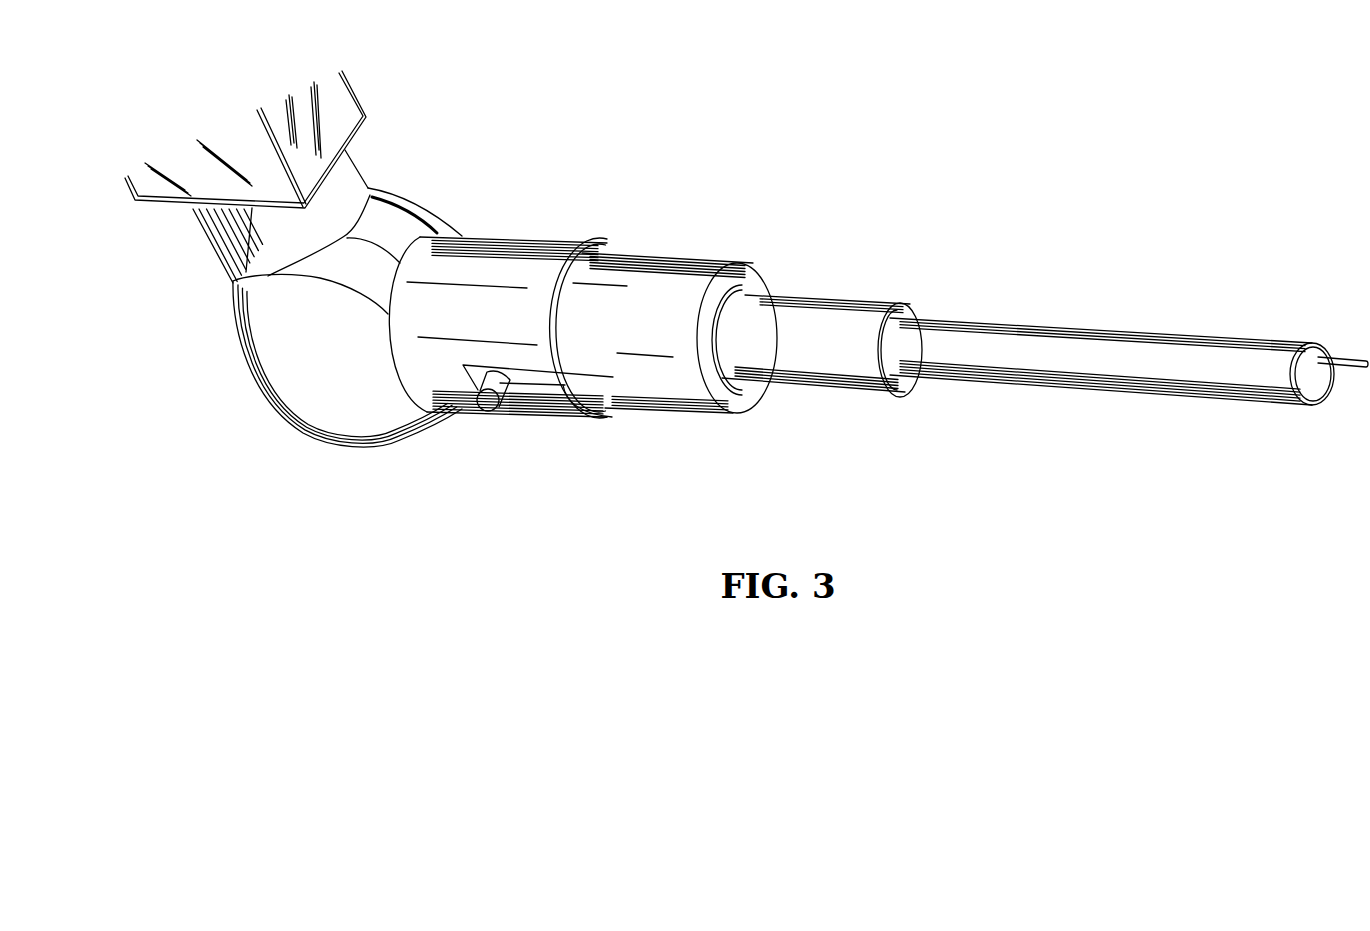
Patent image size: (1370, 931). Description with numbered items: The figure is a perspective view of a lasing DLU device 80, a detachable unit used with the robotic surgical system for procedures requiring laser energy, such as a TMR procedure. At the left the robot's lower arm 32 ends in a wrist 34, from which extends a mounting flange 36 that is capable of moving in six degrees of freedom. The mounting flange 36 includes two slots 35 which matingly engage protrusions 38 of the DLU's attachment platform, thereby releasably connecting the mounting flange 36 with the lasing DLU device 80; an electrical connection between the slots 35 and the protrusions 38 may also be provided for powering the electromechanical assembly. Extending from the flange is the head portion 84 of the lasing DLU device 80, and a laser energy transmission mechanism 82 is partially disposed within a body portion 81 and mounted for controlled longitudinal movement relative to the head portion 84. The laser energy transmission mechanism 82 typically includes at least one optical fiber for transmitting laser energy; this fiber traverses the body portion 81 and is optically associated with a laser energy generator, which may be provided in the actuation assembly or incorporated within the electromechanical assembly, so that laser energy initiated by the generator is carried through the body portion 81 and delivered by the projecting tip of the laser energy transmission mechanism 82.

The lower arm 32 is at (348, 113).
The wrist 34 is at (422, 210).
The mounting flange 36 is at (530, 238).
The slots 35 is at (531, 380).
The protrusions 38 is at (483, 400).
The head portion 84 is at (690, 262).
The lasing DLU device 80 is at (872, 214).
The body portion 81 is at (956, 340).
The laser energy transmission mechanism 82 is at (1347, 357).